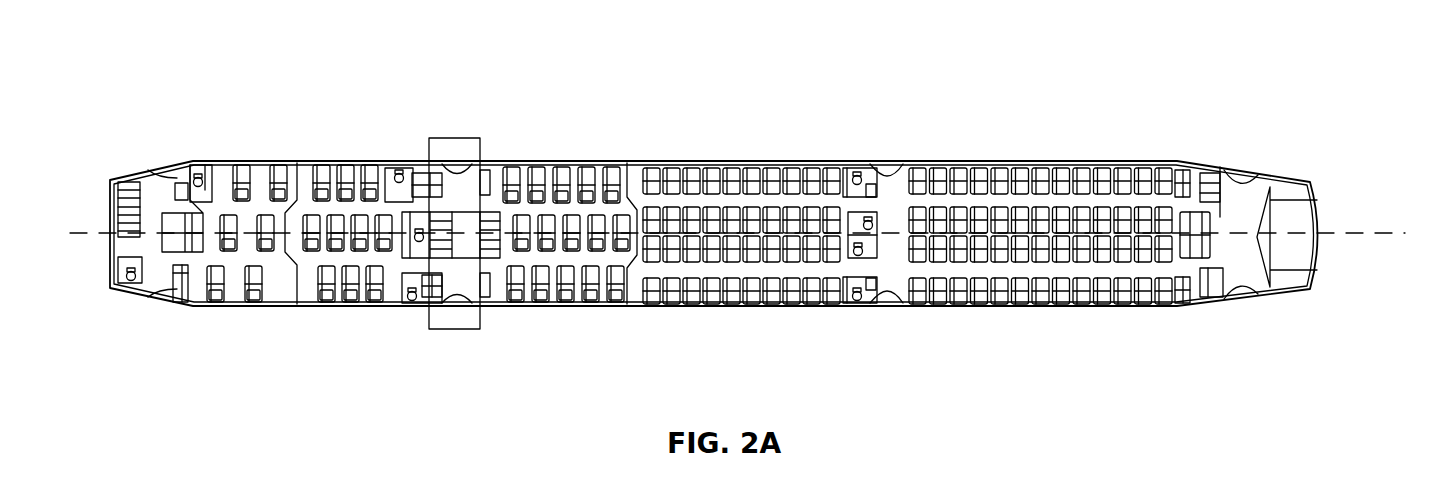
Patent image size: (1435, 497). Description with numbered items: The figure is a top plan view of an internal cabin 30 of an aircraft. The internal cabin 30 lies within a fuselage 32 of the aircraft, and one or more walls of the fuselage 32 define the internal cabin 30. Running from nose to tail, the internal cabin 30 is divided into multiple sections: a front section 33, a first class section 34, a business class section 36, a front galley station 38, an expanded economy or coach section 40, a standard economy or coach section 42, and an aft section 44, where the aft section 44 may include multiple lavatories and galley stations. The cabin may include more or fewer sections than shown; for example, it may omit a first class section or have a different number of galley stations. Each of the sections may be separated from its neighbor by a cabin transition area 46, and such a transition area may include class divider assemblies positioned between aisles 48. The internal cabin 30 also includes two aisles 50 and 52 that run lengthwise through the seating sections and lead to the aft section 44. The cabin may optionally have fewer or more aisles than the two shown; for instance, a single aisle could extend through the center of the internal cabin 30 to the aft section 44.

The internal cabin 30 is at (247, 66).
The fuselage 32 is at (577, 122).
The front section 33 is at (166, 321).
The first class section 34 is at (263, 308).
The business class section 36 is at (334, 161).
The front galley station 38 is at (453, 325).
The expanded economy or coach section 40 is at (554, 308).
The standard economy or coach section 42 is at (683, 161).
The aft section 44 is at (1249, 193).
The cabin transition area 46 is at (183, 161).
The aisles 48 is at (437, 198).
The aisle 50 is at (1042, 203).
The aisle 52 is at (1061, 268).